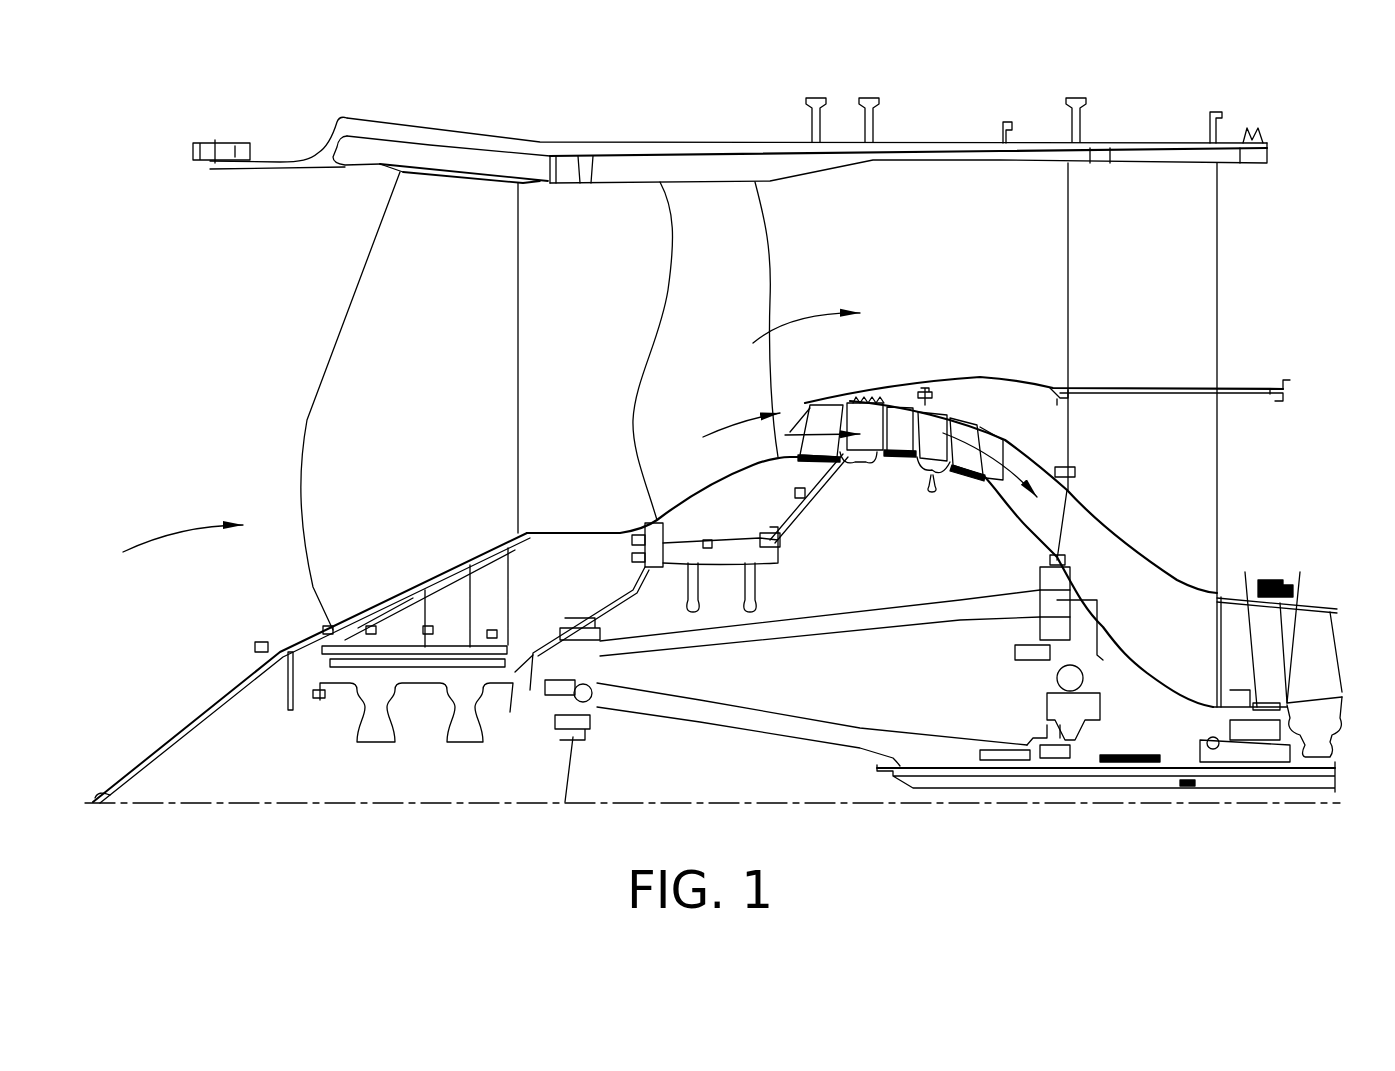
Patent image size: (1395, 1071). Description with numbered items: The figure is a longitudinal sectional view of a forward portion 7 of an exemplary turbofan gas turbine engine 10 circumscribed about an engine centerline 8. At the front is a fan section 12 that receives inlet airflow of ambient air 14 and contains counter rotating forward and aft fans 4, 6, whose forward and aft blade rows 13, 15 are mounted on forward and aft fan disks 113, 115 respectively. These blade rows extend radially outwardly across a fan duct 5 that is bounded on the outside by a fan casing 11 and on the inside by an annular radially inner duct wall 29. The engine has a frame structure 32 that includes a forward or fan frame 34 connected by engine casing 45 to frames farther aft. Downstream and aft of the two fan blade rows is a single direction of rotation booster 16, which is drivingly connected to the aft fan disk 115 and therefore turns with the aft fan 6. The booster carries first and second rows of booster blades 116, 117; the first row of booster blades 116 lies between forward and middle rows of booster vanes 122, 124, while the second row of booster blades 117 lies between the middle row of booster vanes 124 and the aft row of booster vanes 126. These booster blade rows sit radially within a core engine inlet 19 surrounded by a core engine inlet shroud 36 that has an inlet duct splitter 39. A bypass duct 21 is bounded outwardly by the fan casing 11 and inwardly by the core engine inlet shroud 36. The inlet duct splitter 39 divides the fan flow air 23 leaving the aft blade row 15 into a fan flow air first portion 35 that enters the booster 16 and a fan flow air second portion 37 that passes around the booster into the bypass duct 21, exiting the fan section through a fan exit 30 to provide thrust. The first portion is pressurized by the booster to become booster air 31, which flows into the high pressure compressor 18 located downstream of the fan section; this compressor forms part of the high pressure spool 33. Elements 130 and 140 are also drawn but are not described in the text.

The forward fan 4 is at (365, 284).
The fan duct 5 is at (588, 264).
The aft fan 6 is at (662, 305).
The forward portion 7 is at (1160, 848).
The engine centerline 8 is at (325, 800).
The turbofan gas turbine engine 10 is at (908, 856).
The fan casing 11 is at (657, 142).
The fan section 12 is at (995, 103).
The forward blade row 13 is at (398, 373).
The inlet airflow of ambient air 14 is at (172, 530).
The aft blade row 15 is at (672, 420).
The single direction of rotation booster 16 is at (900, 408).
The high pressure compressor 18 is at (1293, 620).
The core engine inlet 19 is at (787, 413).
The bypass duct 21 is at (918, 243).
The fan flow air 23 is at (730, 432).
The annular radially inner duct wall 29 is at (572, 535).
The fan exit 30 is at (1253, 276).
The booster air 31 is at (1013, 433).
The frame structure 32 is at (1237, 140).
The high pressure spool 33 is at (1335, 580).
The fan frame 34 is at (1222, 215).
The fan flow air first portion 35 is at (818, 467).
The core engine inlet shroud 36 is at (960, 420).
The fan flow air second portion 37 is at (790, 327).
The inlet duct splitter 39 is at (812, 402).
The engine casing 45 is at (1248, 590).
The forward fan disk 113 is at (490, 722).
The aft fan disk 115 is at (770, 565).
The first row of booster blades 116 is at (890, 400).
The second row of booster blades 117 is at (960, 386).
The forward row of booster vanes 122 is at (826, 403).
The middle row of booster vanes 124 is at (897, 472).
The aft row of booster vanes 126 is at (985, 470).
The low pressure shaft 130 is at (1073, 782).
The shaft coupling 140 is at (1147, 775).